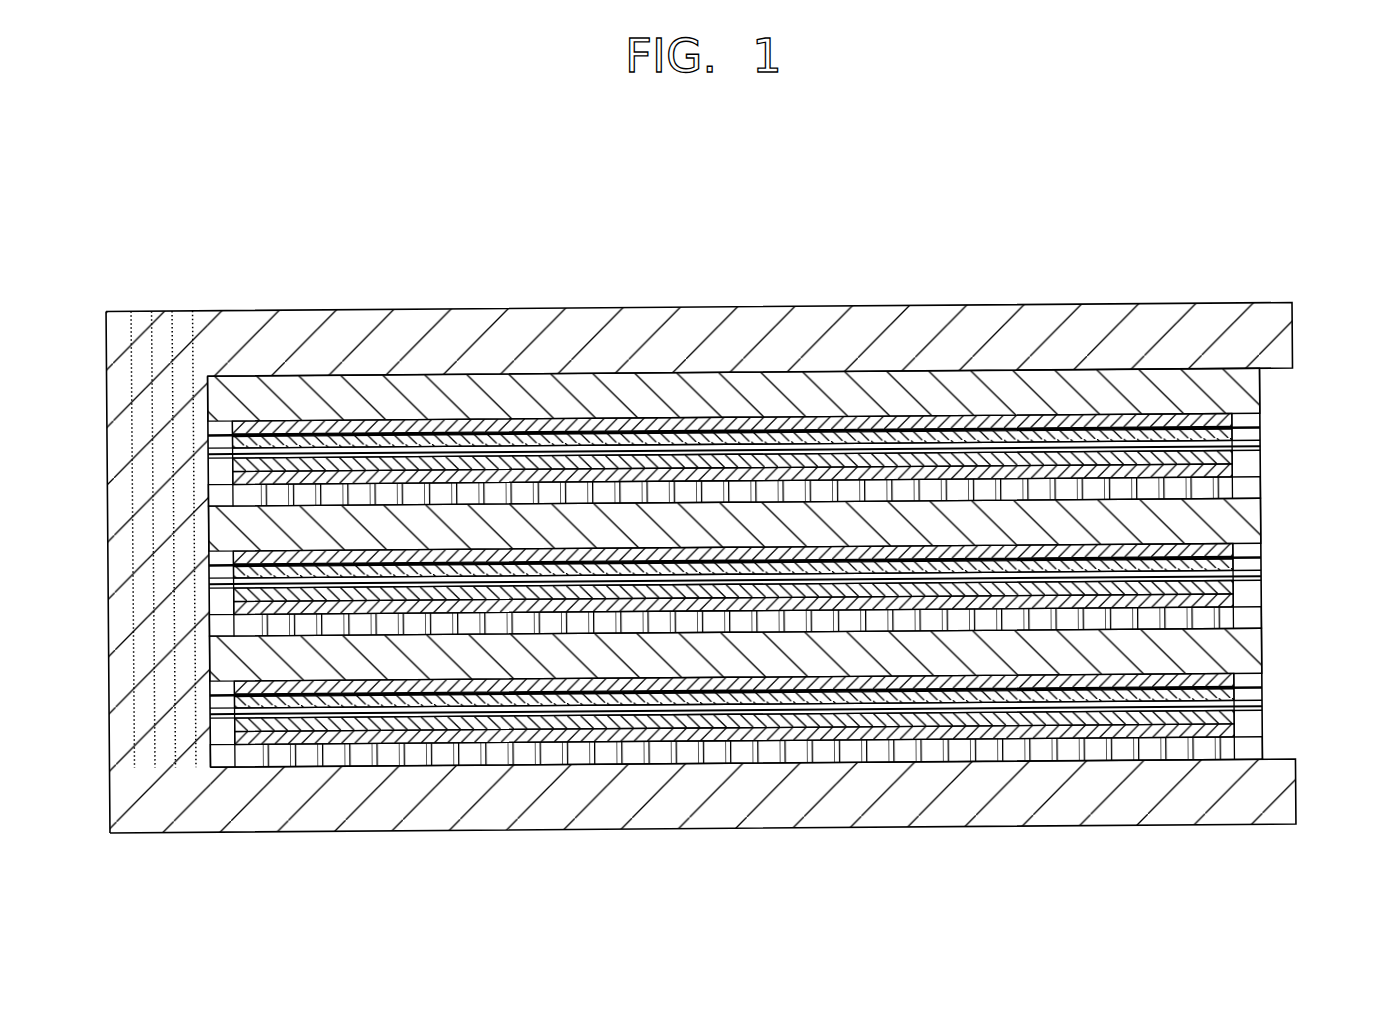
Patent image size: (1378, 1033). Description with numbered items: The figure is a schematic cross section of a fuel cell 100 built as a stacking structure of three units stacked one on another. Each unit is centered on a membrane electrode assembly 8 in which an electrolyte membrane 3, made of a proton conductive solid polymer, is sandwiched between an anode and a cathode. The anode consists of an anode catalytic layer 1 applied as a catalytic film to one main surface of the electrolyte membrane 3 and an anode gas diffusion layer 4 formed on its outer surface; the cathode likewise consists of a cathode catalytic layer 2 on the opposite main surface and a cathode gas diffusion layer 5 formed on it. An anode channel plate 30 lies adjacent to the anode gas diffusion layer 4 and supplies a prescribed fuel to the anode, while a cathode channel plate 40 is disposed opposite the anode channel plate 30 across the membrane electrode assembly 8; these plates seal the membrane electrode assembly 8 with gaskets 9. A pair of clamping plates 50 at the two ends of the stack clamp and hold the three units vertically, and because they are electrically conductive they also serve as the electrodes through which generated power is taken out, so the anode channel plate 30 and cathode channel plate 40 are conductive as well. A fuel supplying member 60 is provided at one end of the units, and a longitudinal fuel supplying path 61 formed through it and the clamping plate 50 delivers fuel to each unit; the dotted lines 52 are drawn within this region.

The fuel cell 100 is at (1307, 229).
The membrane electrode assembly 8 is at (774, 576).
The anode gas diffusion layer 4 is at (1234, 422).
The gasket 9 is at (1250, 418).
The anode catalytic layer 1 is at (1232, 432).
The electrolyte membrane 3 is at (1252, 447).
The cathode catalytic layer 2 is at (1230, 453).
The cathode gas diffusion layer 5 is at (1227, 470).
The anode channel plate 30 is at (1258, 394).
The cathode channel plate 40 is at (1228, 490).
The clamping plate 50 is at (187, 330).
The fastening member 52 is at (149, 327).
The fuel supplying member 60 is at (108, 488).
The longitudinal fuel supplying path 61 is at (140, 603).